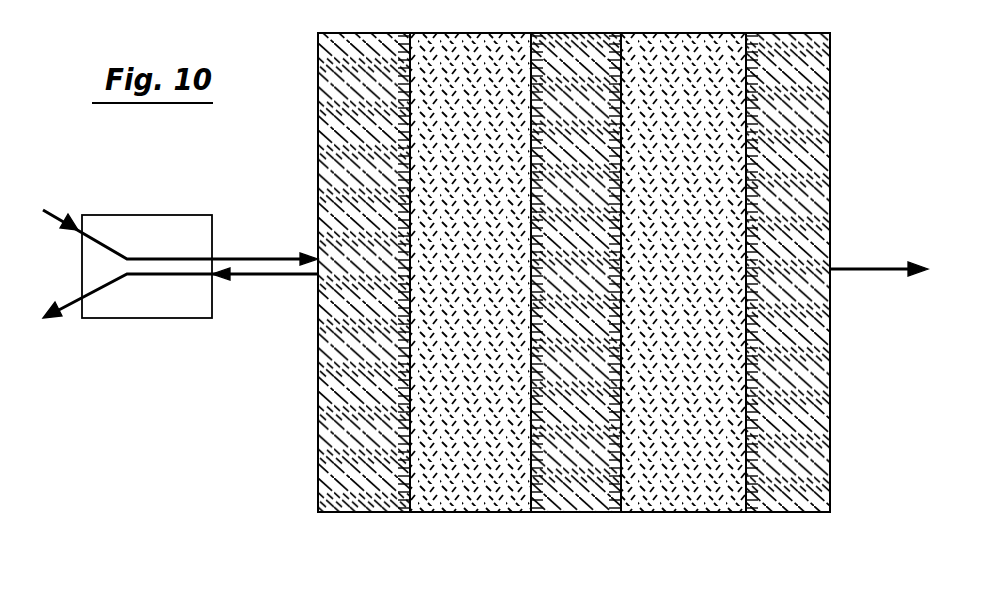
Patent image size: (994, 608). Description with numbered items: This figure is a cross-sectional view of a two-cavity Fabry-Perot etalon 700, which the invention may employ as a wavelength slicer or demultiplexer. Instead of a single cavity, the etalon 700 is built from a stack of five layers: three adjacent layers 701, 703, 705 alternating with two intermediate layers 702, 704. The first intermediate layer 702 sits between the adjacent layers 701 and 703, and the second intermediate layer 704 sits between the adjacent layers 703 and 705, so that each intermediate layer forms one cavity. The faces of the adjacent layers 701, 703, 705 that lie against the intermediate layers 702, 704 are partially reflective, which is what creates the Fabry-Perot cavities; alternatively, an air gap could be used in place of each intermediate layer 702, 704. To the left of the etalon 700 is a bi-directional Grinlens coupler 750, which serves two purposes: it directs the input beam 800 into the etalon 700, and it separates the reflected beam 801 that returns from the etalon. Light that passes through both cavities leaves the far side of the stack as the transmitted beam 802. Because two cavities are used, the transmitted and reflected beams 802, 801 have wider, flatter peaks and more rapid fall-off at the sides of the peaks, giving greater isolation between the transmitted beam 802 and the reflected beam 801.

The multi-cavity etalon 700 is at (510, 306).
The adjacent layer 701 is at (354, 494).
The intermediate layer 702 is at (456, 490).
The adjacent layer 703 is at (572, 495).
The intermediate layer 704 is at (668, 492).
The adjacent layer 705 is at (760, 500).
The bi-directional Grinlens coupler 750 is at (158, 213).
The input beam 800 is at (267, 257).
The reflected beam 801 is at (272, 278).
The transmitted beam 802 is at (878, 272).